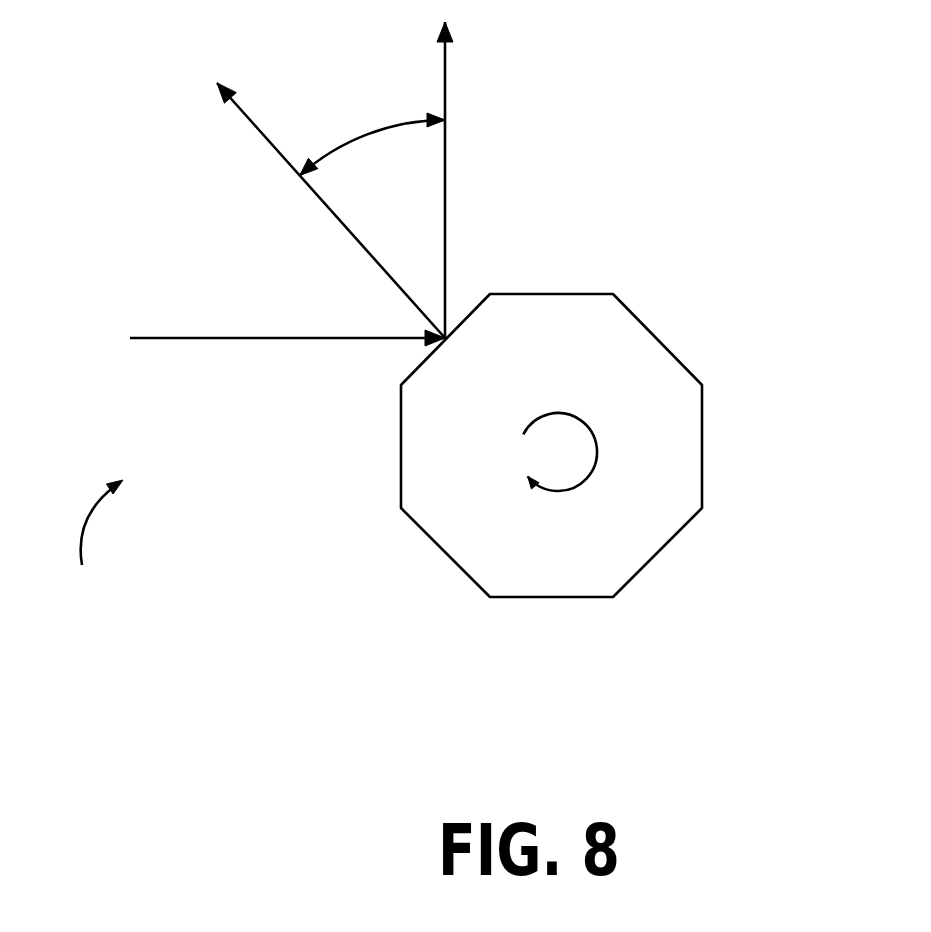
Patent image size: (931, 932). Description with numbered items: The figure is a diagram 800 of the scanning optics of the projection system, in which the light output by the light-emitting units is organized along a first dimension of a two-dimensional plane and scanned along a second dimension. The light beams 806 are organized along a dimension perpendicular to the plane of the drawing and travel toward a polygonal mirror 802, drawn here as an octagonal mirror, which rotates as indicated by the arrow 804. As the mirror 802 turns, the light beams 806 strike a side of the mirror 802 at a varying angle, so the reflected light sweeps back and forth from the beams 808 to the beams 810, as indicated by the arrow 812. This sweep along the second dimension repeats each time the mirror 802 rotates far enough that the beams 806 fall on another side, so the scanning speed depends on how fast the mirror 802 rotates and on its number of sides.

The diagram 800 is at (92, 550).
The polygonal mirror 802 is at (701, 435).
The arrow 804 is at (568, 412).
The light beams 806 is at (223, 340).
The beams 808 is at (250, 117).
The beams 810 is at (447, 95).
The arrow 812 is at (368, 128).